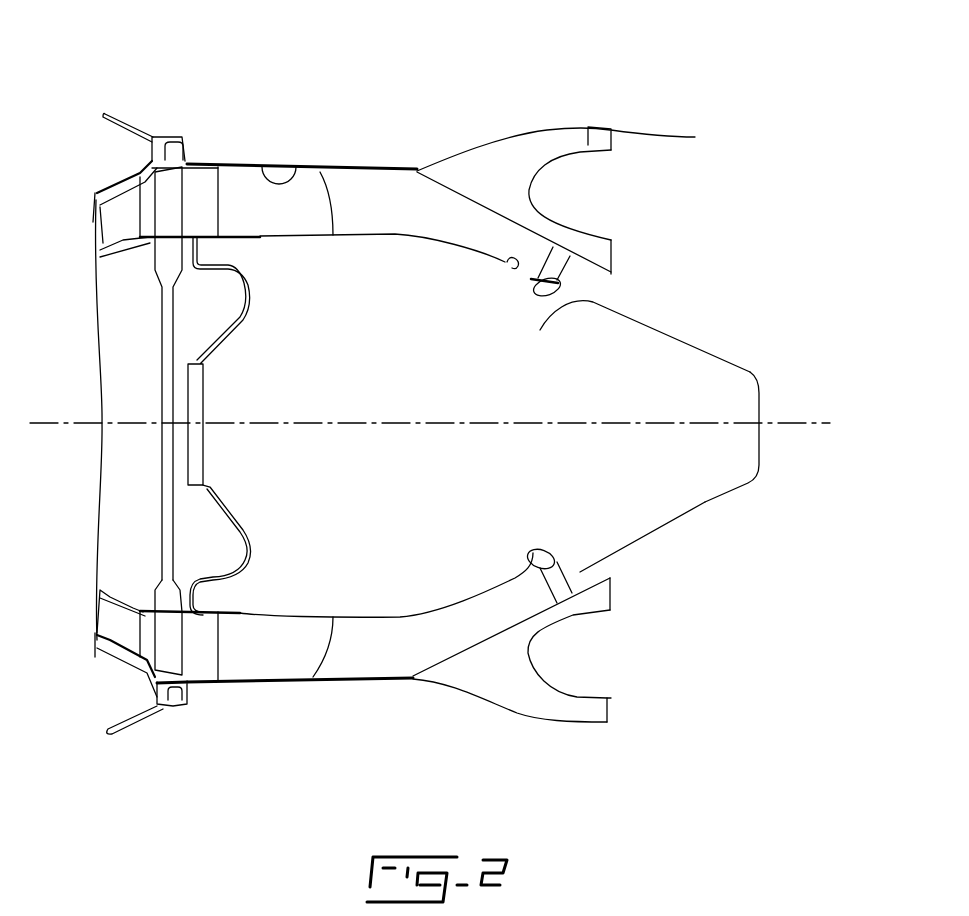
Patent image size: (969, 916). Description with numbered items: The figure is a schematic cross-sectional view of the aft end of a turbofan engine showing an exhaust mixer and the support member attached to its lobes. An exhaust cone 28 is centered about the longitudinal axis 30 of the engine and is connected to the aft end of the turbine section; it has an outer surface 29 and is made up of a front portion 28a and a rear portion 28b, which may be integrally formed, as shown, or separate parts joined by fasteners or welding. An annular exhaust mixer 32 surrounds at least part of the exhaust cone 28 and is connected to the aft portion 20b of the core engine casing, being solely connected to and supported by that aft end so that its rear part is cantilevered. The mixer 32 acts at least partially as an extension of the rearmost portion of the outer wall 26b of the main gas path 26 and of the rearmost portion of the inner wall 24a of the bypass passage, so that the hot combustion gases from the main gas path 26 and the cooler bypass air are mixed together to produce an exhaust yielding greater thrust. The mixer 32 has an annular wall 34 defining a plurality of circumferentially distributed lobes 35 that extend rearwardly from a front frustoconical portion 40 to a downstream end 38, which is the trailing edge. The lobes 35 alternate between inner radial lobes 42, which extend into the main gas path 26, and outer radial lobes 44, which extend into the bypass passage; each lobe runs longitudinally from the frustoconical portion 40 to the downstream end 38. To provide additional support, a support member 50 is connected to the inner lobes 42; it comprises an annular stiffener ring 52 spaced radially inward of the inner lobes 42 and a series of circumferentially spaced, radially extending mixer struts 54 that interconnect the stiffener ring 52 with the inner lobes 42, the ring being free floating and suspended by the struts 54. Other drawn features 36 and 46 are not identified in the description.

The aft portion of the core engine casing 20b is at (278, 167).
The inner wall of the bypass passage 24a is at (388, 170).
The outer wall of the main gas path 26b is at (263, 172).
The main gas path 26 is at (350, 207).
The exhaust cone 28 is at (450, 605).
The front portion of the exhaust cone 28a is at (507, 262).
The rear portion of the exhaust cone 28b is at (658, 328).
The outer surface of the exhaust cone 29 is at (513, 270).
The longitudinal axis 30 is at (773, 423).
The annular exhaust mixer 32 is at (622, 224).
The annular wall 34 is at (520, 133).
The lobes 35 is at (607, 128).
The lower arm 36 is at (398, 679).
The downstream end 38 is at (695, 137).
The front frustoconical portion 40 is at (417, 172).
The inner radial lobes 42 is at (612, 593).
The outer radial lobes 44 is at (611, 708).
The lower bracket 46 is at (589, 578).
The support member 50 is at (555, 130).
The annular stiffener ring 52 is at (542, 556).
The mixer struts 54 is at (558, 289).